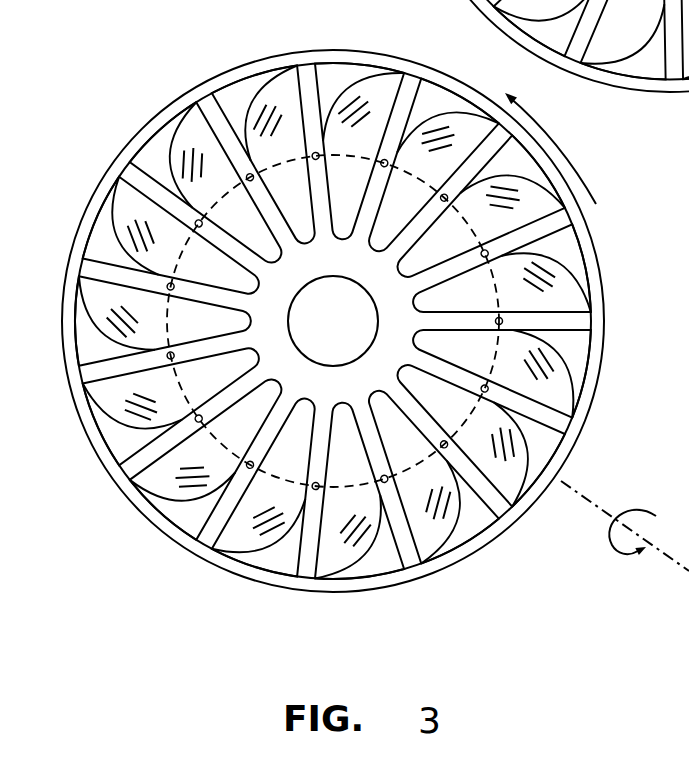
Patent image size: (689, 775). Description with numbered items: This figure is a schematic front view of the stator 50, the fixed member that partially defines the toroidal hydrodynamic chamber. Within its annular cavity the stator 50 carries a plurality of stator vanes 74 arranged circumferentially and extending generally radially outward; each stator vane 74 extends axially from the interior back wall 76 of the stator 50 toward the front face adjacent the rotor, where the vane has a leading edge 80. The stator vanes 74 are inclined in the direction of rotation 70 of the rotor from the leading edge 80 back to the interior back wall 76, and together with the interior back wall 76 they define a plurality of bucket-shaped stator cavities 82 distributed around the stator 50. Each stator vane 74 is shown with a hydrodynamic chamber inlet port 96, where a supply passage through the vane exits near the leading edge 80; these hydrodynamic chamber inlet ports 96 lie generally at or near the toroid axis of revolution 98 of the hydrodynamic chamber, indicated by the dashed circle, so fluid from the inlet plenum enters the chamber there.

The stator 50 is at (166, 102).
The direction of rotation 70 is at (566, 149).
The stator vane 74 is at (562, 297).
The interior back wall 76 is at (470, 514).
The leading edge 80 is at (121, 277).
The stator cavity 82 is at (205, 466).
The hydrodynamic chamber inlet port 96 is at (168, 357).
The toroid axis of revolution 98 is at (358, 152).